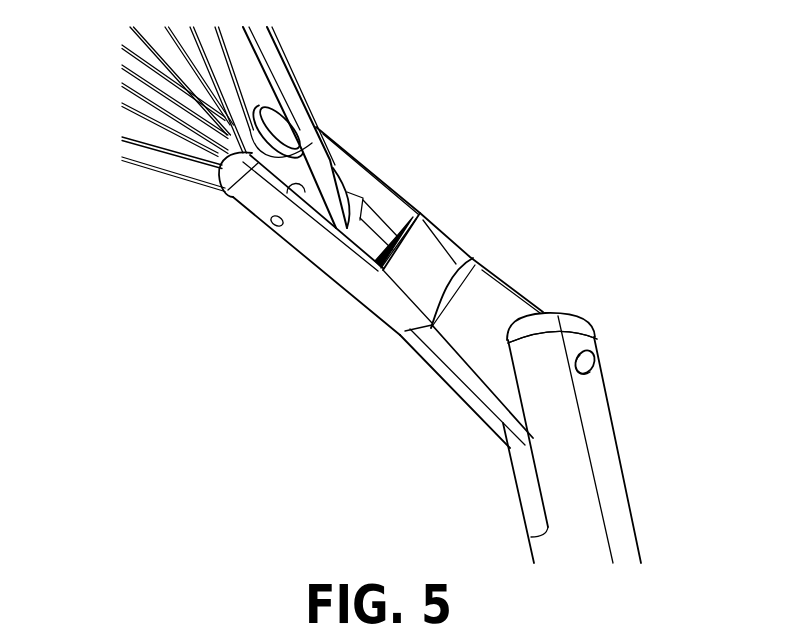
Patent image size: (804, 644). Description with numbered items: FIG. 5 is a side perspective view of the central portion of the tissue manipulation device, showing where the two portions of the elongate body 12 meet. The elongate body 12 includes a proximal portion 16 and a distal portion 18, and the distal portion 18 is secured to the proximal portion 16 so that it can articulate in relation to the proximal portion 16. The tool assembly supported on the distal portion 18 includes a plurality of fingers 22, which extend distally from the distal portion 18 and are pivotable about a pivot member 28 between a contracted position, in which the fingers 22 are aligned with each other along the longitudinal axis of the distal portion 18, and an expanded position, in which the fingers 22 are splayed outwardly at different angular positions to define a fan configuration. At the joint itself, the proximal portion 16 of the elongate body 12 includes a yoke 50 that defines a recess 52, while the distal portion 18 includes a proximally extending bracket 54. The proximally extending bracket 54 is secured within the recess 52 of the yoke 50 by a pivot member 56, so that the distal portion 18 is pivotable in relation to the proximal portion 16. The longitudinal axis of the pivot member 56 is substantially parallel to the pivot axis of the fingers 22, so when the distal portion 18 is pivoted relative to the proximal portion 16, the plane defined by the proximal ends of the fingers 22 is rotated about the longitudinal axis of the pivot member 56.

The elongate body 12 is at (598, 387).
The proximal portion 16 is at (623, 522).
The distal portion 18 is at (433, 230).
The fingers 22 is at (300, 117).
The pivot member 28 is at (272, 228).
The yoke 50 is at (606, 414).
The recess 52 is at (536, 507).
The proximally extending bracket 54 is at (495, 268).
The pivot member 56 is at (593, 347).